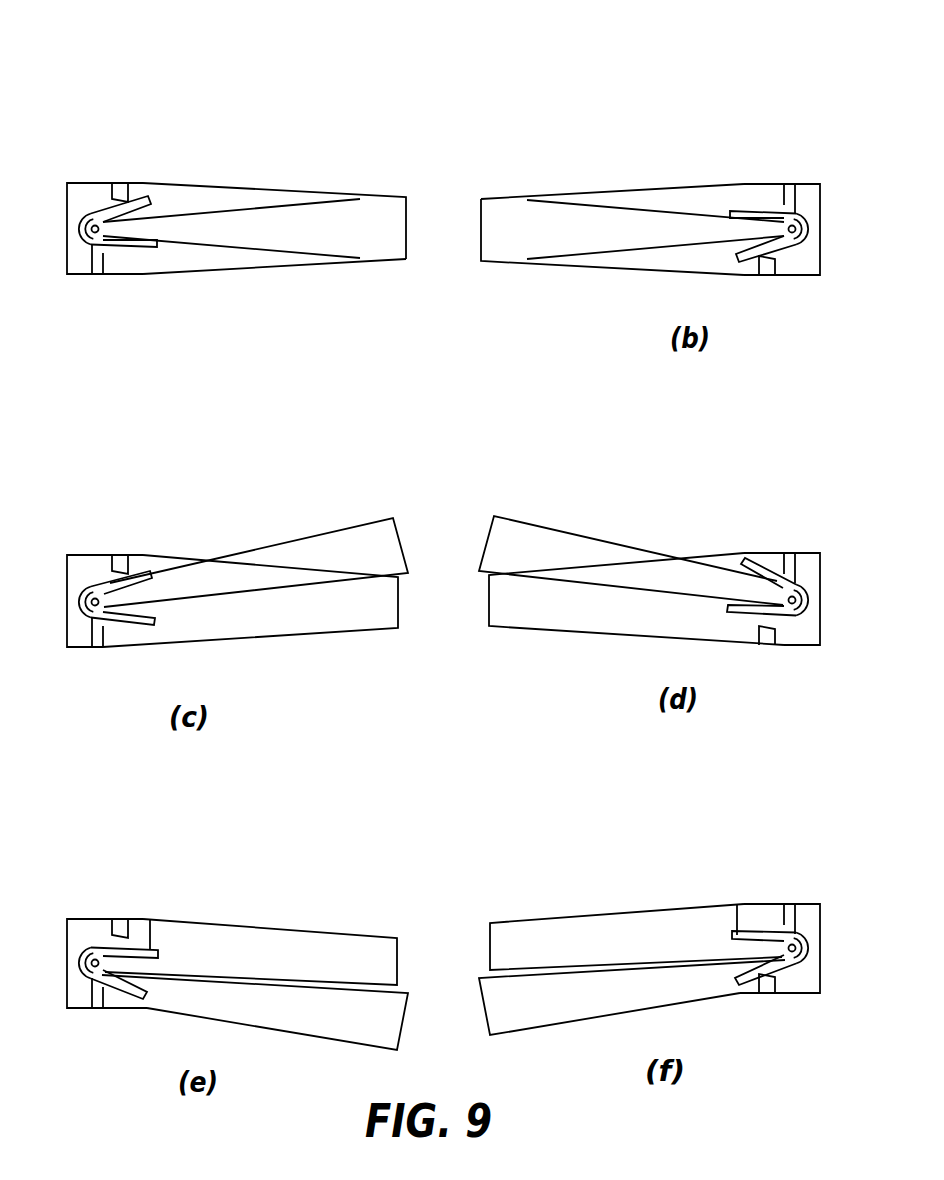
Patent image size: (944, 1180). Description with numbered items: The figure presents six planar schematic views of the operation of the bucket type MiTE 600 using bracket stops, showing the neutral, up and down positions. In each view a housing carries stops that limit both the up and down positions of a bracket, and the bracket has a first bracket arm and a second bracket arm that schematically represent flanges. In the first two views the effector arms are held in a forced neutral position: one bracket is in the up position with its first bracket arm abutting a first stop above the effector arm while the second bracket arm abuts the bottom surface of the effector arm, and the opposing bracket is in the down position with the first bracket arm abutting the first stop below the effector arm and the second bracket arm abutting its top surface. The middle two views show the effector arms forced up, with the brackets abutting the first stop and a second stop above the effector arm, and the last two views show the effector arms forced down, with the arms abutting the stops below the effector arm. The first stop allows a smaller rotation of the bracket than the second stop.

The bucket type MiTE 600 is at (213, 182).